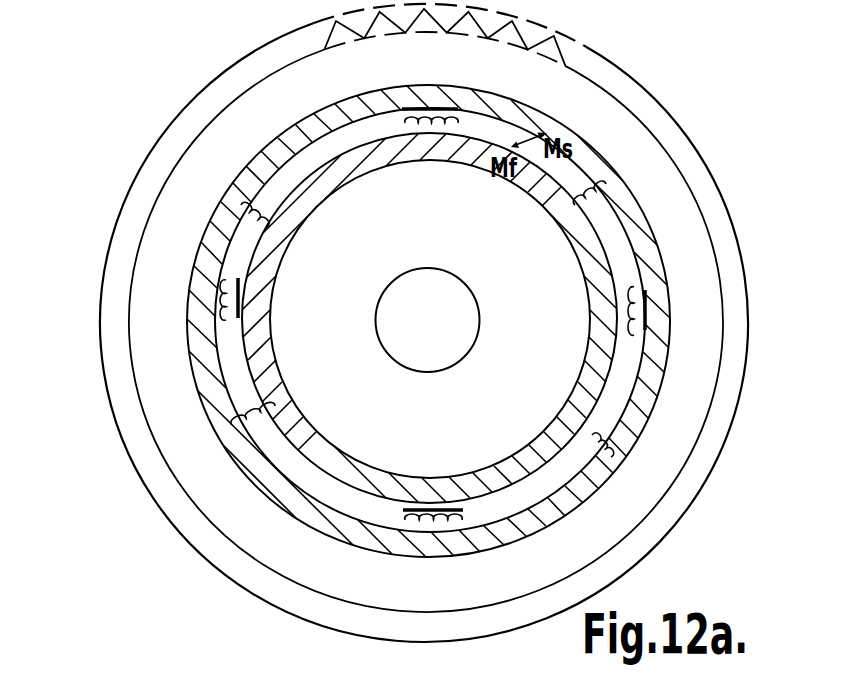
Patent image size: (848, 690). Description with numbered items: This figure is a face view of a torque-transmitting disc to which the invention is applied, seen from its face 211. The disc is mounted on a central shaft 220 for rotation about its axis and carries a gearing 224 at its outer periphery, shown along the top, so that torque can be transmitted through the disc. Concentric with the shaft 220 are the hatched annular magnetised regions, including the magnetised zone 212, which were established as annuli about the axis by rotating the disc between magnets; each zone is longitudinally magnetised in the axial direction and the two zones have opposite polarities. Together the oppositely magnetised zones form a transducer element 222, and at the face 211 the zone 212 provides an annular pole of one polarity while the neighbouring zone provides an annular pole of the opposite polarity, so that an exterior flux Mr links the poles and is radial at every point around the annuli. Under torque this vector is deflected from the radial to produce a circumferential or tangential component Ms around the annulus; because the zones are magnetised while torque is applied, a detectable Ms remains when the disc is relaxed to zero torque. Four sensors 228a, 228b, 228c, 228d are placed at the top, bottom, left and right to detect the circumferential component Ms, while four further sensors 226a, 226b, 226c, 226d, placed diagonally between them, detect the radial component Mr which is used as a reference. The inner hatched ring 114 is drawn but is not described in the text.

The face 211 is at (803, 185).
The transducer element 222 is at (247, 180).
The gearing 224 is at (568, 42).
The magnetised zone 212 is at (322, 114).
The rotor ring 114 is at (375, 160).
The shaft 220 is at (430, 362).
The sensor 228a is at (436, 100).
The sensor 228b is at (440, 530).
The sensor 228c is at (218, 300).
The sensor 228d is at (650, 330).
The sensor 226a is at (617, 200).
The sensor 226b is at (230, 410).
The sensor 226c is at (245, 186).
The sensor 226d is at (610, 452).